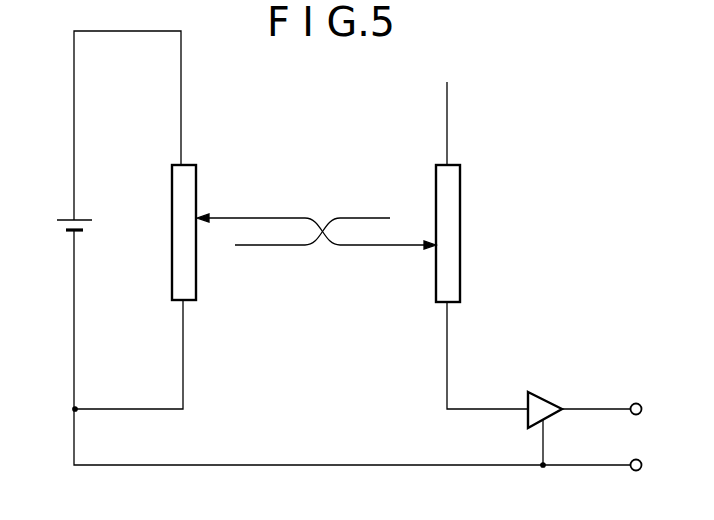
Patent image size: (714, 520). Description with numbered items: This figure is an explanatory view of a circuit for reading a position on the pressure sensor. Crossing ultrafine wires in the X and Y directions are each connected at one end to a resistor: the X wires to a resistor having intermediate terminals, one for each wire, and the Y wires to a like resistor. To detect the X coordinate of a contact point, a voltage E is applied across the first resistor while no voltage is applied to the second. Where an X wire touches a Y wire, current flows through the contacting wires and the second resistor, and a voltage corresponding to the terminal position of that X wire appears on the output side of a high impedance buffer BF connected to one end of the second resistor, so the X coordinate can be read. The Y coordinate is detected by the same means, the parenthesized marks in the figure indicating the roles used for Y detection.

The voltage E is at (71, 264).
The high impedance buffer BF is at (541, 393).